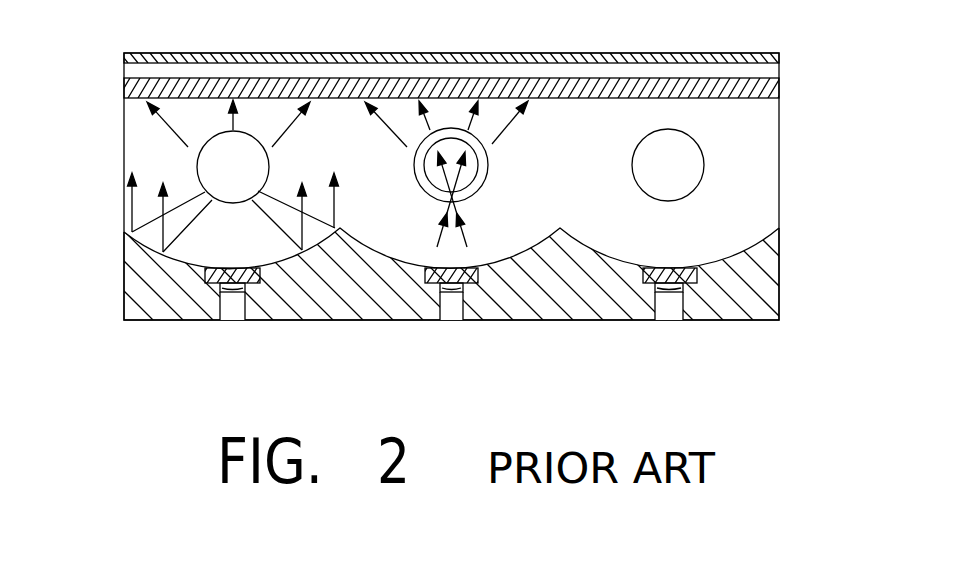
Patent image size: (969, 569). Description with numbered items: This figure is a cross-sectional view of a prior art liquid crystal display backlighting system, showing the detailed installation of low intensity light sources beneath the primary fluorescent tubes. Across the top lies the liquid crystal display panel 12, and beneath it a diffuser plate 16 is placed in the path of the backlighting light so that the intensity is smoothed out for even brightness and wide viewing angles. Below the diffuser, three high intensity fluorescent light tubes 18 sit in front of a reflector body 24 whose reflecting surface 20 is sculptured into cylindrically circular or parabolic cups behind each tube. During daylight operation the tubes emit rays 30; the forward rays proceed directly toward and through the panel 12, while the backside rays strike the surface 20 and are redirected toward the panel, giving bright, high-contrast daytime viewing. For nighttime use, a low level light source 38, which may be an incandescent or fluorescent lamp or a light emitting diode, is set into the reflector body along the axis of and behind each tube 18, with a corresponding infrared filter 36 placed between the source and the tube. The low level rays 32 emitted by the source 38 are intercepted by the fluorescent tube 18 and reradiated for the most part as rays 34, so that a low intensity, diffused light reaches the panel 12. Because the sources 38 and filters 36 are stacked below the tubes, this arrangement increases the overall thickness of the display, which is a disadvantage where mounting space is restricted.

The liquid crystal display panel 12 is at (623, 52).
The diffuser plate 16 is at (768, 98).
The high intensity fluorescent light tube 18 is at (702, 147).
The reflecting surface 20 is at (747, 242).
The reflector body 24 is at (779, 273).
The rays 30 is at (153, 228).
The rays 32 is at (475, 233).
The rays 34 is at (492, 144).
The infrared filter 36 is at (252, 284).
The low level light source 38 is at (219, 292).